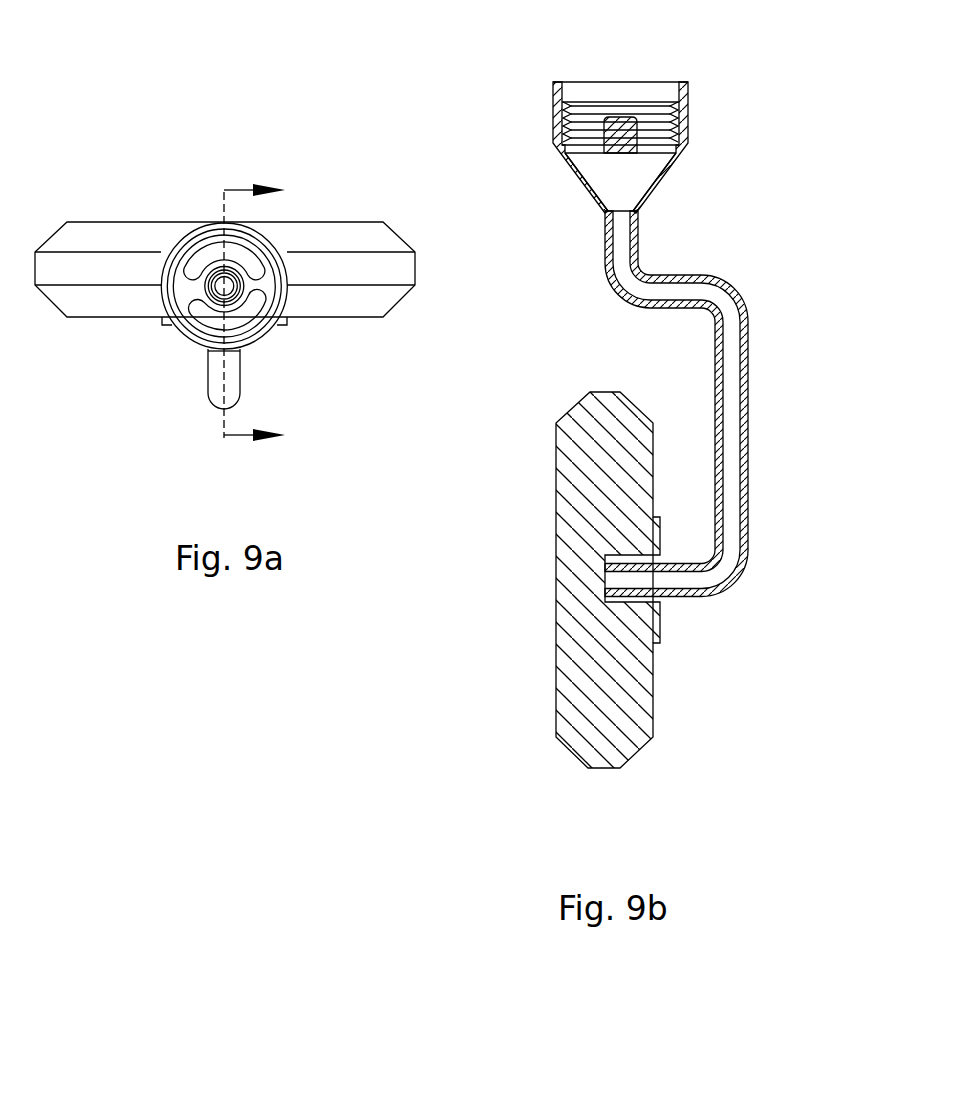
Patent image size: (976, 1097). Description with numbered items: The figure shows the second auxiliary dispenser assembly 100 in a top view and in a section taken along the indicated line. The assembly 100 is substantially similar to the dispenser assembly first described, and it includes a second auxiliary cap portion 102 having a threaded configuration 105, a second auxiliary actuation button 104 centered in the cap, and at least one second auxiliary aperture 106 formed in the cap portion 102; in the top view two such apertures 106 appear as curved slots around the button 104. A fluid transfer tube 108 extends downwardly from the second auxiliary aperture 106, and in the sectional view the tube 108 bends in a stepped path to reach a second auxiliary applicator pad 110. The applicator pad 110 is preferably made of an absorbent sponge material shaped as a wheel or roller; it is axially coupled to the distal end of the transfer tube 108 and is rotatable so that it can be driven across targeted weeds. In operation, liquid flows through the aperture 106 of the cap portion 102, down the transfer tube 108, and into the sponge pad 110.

In FIG. 9a, the second auxiliary dispenser assembly 100 is at (185, 108).
In FIG. 9a, the second auxiliary cap portion 102 is at (210, 206).
In FIG. 9b, the second auxiliary cap portion 102 is at (703, 128).
In FIG. 9a, the second auxiliary actuation button 104 is at (226, 288).
In FIG. 9b, the second auxiliary actuation button 104 is at (618, 128).
In FIG. 9b, the threaded configuration 105 is at (563, 107).
In FIG. 9a, the second auxiliary aperture 106 is at (250, 262).
In FIG. 9b, the second auxiliary aperture 106 is at (675, 152).
In FIG. 9b, the fluid transfer tube 108 is at (740, 412).
In FIG. 9a, the second auxiliary applicator pad 110 is at (378, 278).
In FIG. 9b, the second auxiliary applicator pad 110 is at (582, 638).